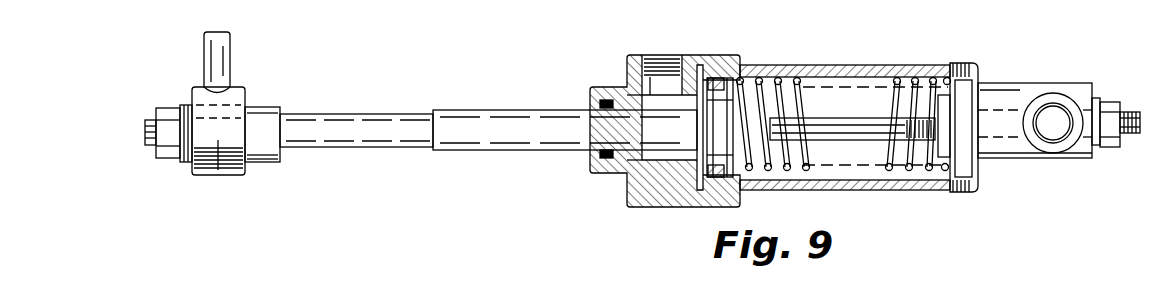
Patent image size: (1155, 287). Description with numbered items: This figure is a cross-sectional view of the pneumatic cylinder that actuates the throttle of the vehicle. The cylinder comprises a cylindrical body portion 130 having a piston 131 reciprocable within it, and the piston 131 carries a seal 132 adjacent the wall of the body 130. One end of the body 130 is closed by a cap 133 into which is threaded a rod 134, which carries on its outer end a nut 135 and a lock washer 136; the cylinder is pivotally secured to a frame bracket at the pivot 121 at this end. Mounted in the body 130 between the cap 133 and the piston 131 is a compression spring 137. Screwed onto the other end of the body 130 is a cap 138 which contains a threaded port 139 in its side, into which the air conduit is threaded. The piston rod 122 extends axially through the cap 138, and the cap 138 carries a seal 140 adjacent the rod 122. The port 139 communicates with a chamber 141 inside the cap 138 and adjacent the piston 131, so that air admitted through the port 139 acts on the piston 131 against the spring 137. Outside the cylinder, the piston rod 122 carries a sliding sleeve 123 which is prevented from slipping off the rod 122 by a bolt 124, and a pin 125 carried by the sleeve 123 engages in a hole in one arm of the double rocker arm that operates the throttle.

The pivot 121 is at (1053, 113).
The piston rod 122 is at (359, 126).
The sliding sleeve 123 is at (232, 165).
The bolt 124 is at (167, 157).
The pin 125 is at (228, 63).
The cylindrical body portion 130 is at (887, 188).
The piston 131 is at (720, 112).
The seal 132 is at (709, 190).
The cap 133 is at (960, 98).
The rod 134 is at (835, 115).
The nut 135 is at (1110, 120).
The lock washer 136 is at (1095, 97).
The compression spring 137 is at (897, 80).
The cap 138 is at (653, 192).
The threaded port 139 is at (660, 53).
The seal 140 is at (598, 88).
The chamber 141 is at (640, 170).